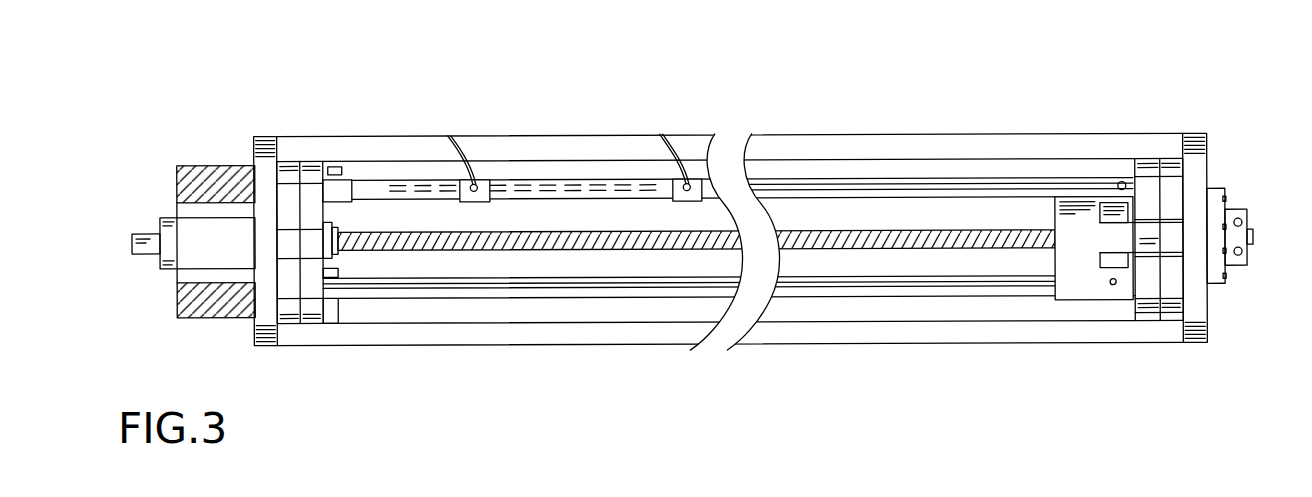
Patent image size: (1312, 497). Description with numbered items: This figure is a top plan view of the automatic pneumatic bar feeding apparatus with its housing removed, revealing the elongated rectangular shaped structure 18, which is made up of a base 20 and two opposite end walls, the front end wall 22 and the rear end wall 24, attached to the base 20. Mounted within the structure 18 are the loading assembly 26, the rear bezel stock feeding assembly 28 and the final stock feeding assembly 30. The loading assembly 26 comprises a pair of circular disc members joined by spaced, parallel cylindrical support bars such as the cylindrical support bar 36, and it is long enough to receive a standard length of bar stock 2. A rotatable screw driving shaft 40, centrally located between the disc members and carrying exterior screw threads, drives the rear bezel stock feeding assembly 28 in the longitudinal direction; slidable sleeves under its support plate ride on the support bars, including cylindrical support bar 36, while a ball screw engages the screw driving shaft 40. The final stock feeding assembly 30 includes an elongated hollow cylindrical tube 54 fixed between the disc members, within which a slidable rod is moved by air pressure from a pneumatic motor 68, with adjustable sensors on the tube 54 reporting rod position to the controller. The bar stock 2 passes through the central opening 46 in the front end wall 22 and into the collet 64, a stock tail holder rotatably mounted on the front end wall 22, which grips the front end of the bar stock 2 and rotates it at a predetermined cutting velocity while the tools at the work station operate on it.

The bar stock 2 is at (149, 231).
The elongated rectangular shaped structure 18 is at (1204, 350).
The base 20 is at (913, 346).
The front end wall 22 is at (252, 150).
The end wall 24 is at (1208, 162).
The loading assembly 26 is at (633, 360).
The rear bezel stock feeding assembly 28 is at (1048, 209).
The final stock feeding assembly 30 is at (565, 176).
The cylindrical support bar 36 is at (487, 287).
The screw driving shaft 40 is at (870, 229).
The central opening 46 is at (250, 268).
The elongated hollow cylindrical tube 54 is at (927, 189).
The collet 64 is at (162, 307).
The pneumatic motor 68 is at (1237, 271).